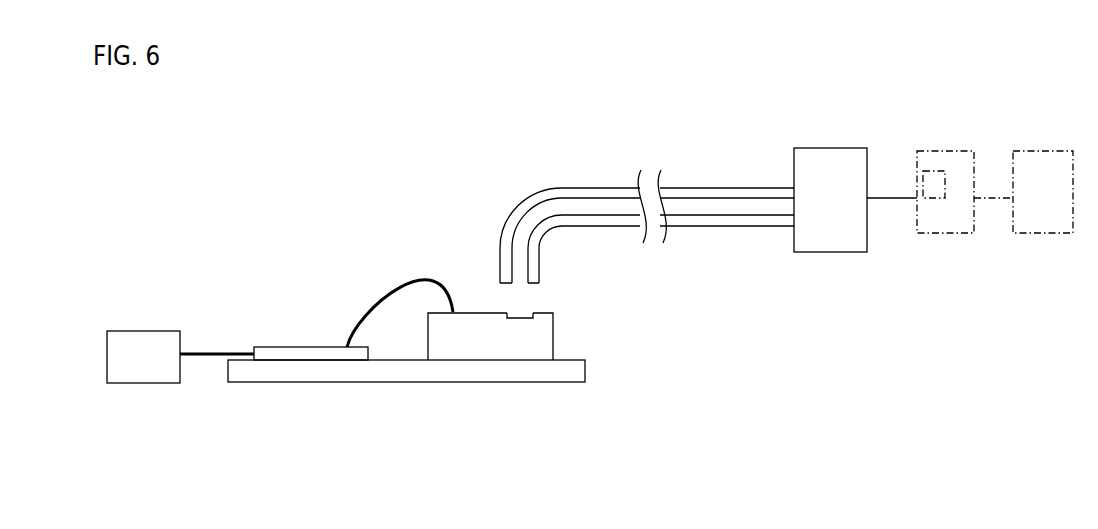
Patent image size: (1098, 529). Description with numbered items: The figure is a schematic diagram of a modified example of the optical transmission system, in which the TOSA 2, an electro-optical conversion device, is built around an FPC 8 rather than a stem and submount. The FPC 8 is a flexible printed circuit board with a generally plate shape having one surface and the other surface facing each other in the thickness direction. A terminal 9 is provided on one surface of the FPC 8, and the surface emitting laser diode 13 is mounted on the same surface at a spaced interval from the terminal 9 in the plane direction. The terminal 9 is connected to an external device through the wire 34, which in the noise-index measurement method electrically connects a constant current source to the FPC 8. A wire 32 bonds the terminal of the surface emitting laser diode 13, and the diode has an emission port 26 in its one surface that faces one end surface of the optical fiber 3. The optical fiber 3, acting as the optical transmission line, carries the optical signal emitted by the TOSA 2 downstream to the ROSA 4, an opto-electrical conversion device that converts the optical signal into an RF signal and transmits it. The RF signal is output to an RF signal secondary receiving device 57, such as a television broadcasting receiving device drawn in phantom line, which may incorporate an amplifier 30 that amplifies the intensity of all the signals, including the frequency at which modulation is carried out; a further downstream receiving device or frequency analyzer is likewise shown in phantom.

The TOSA 2 is at (426, 357).
The optical fiber 3 is at (588, 188).
The ROSA 4 is at (828, 252).
The FPC 8 is at (585, 368).
The terminal 9 is at (307, 347).
The surface emitting laser diode 13 is at (553, 337).
The emission port 26 is at (520, 318).
The amplifier 30 is at (932, 171).
The wire 32 is at (390, 288).
The wire 34 is at (213, 353).
The RF signal secondary receiving device 57 is at (943, 233).